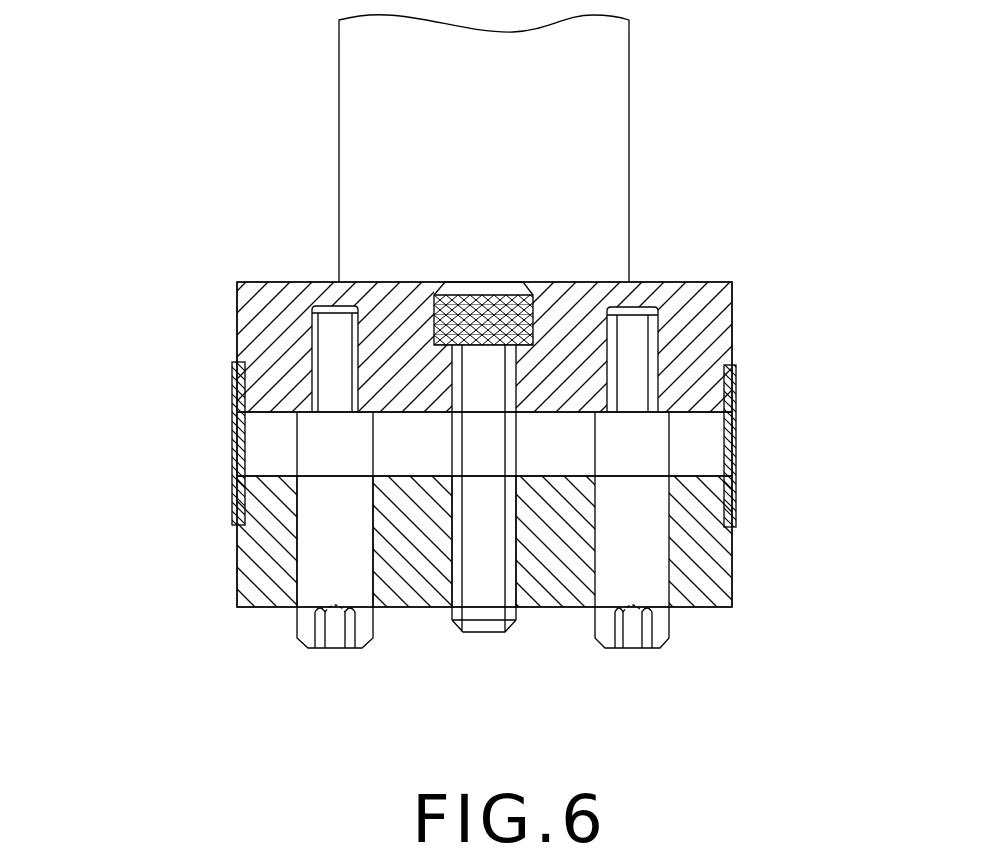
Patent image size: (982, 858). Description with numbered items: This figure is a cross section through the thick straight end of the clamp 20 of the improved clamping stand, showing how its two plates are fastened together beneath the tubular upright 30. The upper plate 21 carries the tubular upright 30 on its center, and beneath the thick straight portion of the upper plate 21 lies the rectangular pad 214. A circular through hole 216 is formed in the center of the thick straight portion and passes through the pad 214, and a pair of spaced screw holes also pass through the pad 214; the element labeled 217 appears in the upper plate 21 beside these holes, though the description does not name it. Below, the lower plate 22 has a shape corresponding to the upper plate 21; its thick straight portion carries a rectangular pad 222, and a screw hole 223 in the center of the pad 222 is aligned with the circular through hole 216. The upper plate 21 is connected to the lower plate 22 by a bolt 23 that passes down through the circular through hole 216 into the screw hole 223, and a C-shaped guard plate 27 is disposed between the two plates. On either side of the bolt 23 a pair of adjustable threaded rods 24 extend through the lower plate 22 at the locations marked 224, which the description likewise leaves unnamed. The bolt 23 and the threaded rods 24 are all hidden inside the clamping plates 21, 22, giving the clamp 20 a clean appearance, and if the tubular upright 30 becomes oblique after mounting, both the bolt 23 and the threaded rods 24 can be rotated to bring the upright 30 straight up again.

The clamp 20 is at (183, 267).
The upper plate 21 is at (702, 298).
The lower plate 22 is at (717, 608).
The bolt 23 is at (485, 582).
The adjustable threaded rods 24 is at (300, 628).
The C-shaped guard plate 27 is at (237, 445).
The tubular upright 30 is at (610, 105).
The rectangular pad 214 is at (252, 412).
The circular through hole 216 is at (432, 318).
The guide pin 217 is at (312, 342).
The rectangular pad 222 is at (255, 476).
The screw hole 223 is at (515, 573).
The bolt hole 224 is at (293, 560).